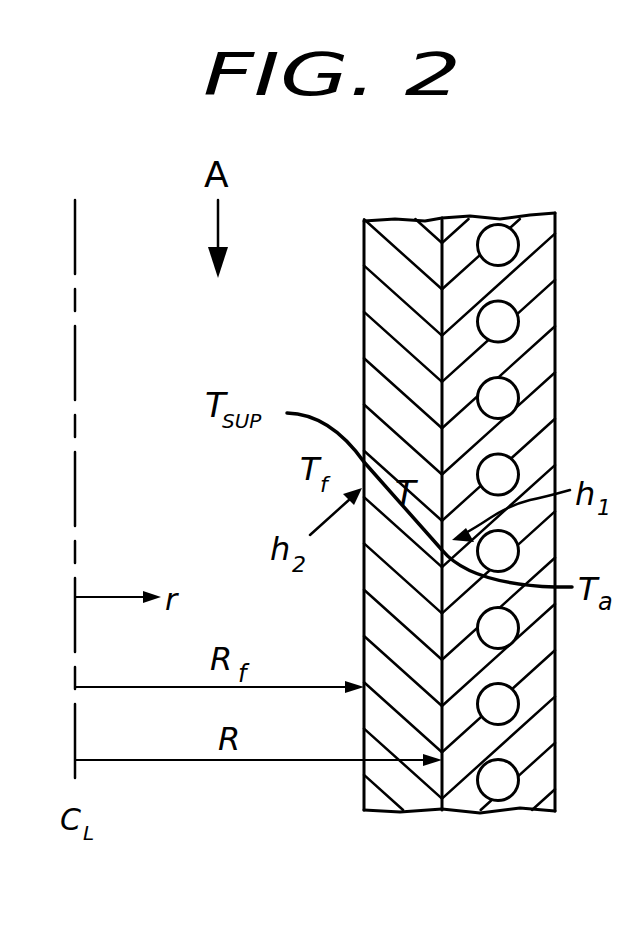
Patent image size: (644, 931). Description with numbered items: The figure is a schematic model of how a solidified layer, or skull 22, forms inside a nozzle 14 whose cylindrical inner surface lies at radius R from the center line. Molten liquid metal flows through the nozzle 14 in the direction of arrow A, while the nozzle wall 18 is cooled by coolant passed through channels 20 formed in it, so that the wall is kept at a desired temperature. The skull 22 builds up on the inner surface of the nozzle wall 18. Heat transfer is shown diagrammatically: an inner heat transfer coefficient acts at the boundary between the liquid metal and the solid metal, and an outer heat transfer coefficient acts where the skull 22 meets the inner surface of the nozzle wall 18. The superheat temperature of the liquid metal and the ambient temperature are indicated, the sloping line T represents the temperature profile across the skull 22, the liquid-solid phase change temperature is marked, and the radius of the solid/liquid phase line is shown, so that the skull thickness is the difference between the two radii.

The nozzle 14 is at (555, 672).
The nozzle wall 18 is at (478, 218).
The channels 20 is at (503, 327).
The skull 22 is at (392, 218).